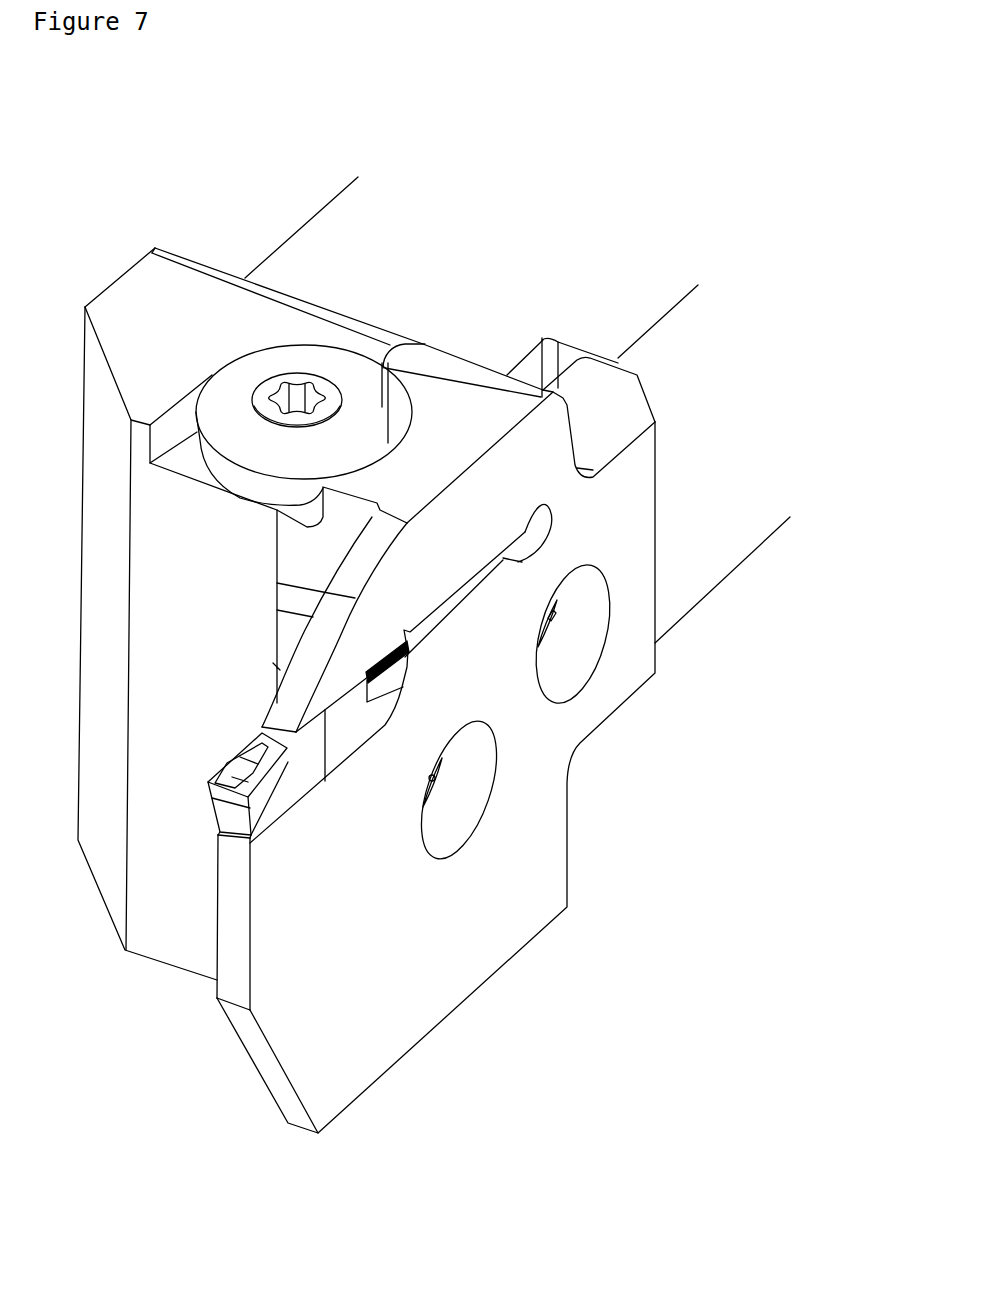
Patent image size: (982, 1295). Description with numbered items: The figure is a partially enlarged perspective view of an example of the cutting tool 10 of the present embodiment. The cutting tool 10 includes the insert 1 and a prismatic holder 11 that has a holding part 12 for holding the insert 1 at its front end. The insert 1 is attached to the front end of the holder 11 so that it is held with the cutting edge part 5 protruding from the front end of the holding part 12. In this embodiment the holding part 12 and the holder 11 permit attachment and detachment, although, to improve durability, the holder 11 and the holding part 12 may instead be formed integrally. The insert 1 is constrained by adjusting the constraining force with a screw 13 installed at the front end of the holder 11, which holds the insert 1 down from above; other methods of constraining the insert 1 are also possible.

The insert 1 is at (315, 758).
The cutting edge part 5 is at (220, 833).
The cutting tool 10 is at (302, 193).
The holder 11 is at (699, 572).
The holding part 12 is at (478, 880).
The screw 13 is at (277, 383).